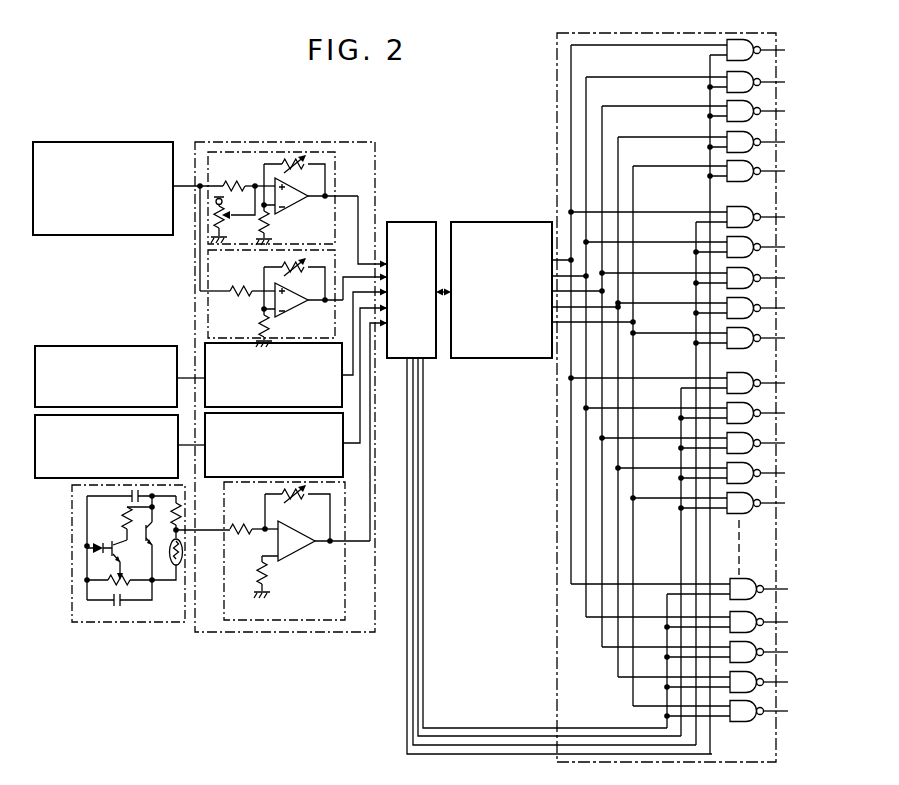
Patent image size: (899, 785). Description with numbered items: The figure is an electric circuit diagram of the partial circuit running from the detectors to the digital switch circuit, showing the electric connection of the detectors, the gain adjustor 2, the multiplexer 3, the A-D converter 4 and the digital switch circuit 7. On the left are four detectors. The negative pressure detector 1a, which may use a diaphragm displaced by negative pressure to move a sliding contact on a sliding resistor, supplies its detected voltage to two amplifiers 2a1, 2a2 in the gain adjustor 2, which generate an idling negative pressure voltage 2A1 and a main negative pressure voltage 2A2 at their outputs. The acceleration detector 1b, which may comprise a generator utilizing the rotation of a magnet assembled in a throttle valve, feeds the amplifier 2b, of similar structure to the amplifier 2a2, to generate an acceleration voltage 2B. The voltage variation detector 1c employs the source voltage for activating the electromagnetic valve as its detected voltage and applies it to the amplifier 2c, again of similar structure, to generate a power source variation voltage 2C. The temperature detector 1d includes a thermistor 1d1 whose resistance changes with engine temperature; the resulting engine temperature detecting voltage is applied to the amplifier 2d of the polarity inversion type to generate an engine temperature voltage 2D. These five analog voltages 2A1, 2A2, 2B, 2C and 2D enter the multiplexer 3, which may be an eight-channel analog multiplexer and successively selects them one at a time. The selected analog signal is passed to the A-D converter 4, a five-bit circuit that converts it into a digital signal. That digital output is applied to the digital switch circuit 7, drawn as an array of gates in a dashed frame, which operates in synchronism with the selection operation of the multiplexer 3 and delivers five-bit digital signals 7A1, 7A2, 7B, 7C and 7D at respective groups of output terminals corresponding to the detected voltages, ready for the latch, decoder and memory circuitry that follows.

The negative pressure detector 1a is at (104, 142).
The acceleration detector 1b is at (60, 346).
The voltage variation detector 1c is at (37, 480).
The temperature detector 1d is at (150, 622).
The thermistor 1d1 is at (179, 566).
The gain adjustor 2 is at (303, 142).
The amplifier 2a1 is at (215, 142).
The amplifier 2a2 is at (195, 313).
The amplifier 2b is at (232, 343).
The amplifier 2c is at (237, 477).
The amplifier 2d is at (295, 632).
The idling negative pressure voltage 2A1 is at (384, 262).
The main negative pressure voltage 2A2 is at (384, 276).
The acceleration voltage 2B is at (384, 291).
The power source variation voltage 2C is at (384, 307).
The engine temperature voltage 2D is at (384, 323).
The multiplexer 3 is at (418, 358).
The A-D converter 4 is at (515, 358).
The digital switch circuit 7 is at (557, 92).
The digital signal 7A1 is at (808, 42).
The digital signal 7A2 is at (808, 208).
The digital signal 7B is at (808, 375).
The digital signal 7C is at (808, 520).
The digital signal 7D is at (808, 582).